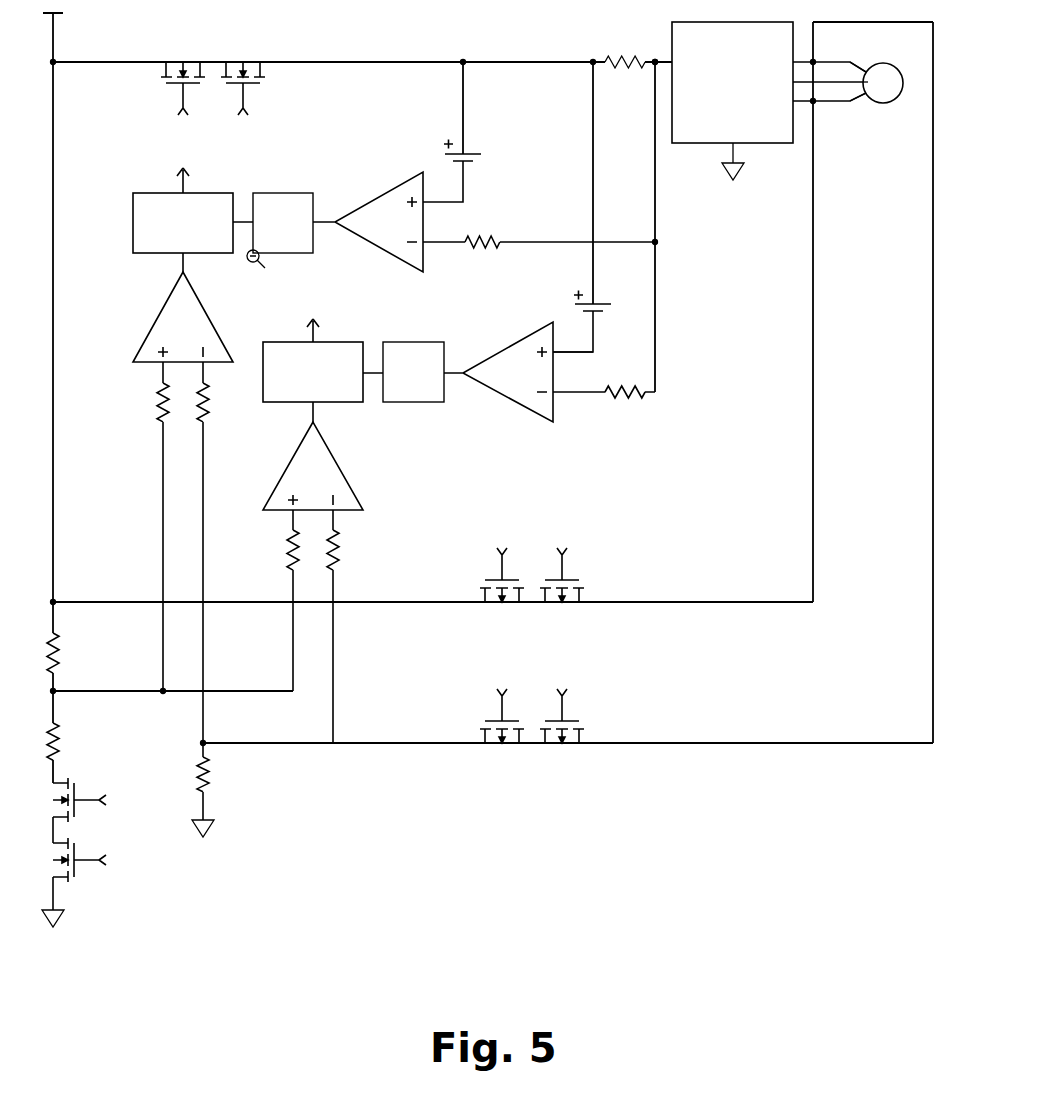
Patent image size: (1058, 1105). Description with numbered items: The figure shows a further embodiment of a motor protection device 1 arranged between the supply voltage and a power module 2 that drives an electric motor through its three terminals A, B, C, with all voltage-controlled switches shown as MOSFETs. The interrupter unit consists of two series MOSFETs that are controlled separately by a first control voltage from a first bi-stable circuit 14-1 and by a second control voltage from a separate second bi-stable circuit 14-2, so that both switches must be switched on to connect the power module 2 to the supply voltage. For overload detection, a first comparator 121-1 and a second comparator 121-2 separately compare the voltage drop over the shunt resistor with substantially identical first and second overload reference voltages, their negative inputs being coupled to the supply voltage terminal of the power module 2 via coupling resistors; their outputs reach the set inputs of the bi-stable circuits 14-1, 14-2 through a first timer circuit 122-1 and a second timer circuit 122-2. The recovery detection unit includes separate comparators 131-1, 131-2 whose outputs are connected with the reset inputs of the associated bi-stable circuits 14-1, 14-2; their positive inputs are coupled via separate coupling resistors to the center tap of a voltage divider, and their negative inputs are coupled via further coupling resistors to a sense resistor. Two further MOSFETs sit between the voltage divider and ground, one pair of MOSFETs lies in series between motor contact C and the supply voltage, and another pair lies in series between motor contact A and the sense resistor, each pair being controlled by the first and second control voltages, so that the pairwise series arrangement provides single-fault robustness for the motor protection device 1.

The motor protection device 1 is at (627, 790).
The power module 2 is at (725, 94).
The first bi-stable circuit 14-1 is at (160, 235).
The second bi-stable circuit 14-2 is at (290, 385).
The first comparator 121-1 is at (385, 207).
The second comparator 121-2 is at (523, 391).
The first timer circuit 122-1 is at (282, 245).
The second timer circuit 122-2 is at (397, 393).
The recovery detection comparator 131-1 is at (152, 352).
The recovery detection comparator 131-2 is at (280, 493).
The motor terminal A is at (852, 55).
The motor terminal B is at (848, 88).
The motor terminal C is at (846, 112).